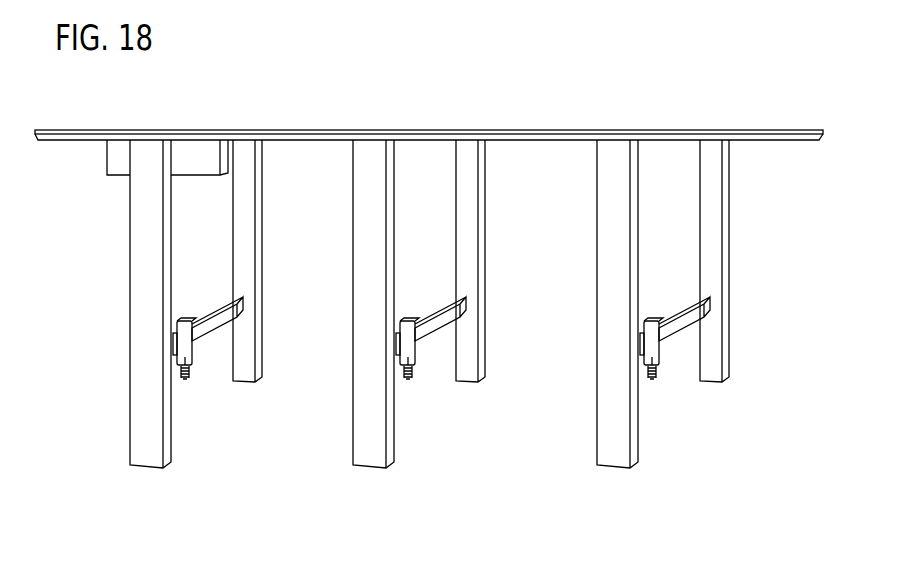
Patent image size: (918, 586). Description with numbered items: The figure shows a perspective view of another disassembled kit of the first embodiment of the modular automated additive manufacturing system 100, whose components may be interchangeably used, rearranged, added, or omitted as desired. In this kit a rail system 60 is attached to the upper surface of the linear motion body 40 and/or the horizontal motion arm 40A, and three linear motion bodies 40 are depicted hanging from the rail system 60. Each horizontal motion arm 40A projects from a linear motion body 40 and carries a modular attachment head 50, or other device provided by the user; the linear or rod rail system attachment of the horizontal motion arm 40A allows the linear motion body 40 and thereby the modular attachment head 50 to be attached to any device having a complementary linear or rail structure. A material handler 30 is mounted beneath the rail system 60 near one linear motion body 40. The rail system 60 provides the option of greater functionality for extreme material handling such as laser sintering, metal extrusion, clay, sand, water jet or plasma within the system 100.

The modular automated additive manufacturing system 100 is at (653, 73).
The rail system 60 is at (529, 128).
The material handler 30 is at (117, 163).
The linear motion body 40 is at (140, 412).
The horizontal motion arm 40A is at (220, 312).
The modular attachment head 50 is at (183, 378).